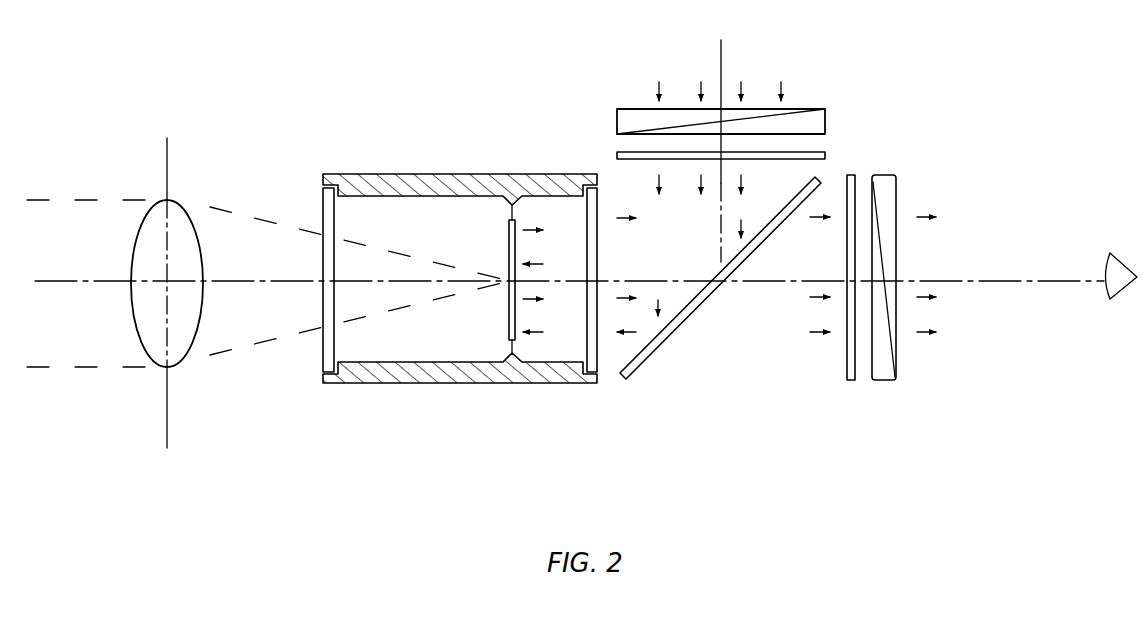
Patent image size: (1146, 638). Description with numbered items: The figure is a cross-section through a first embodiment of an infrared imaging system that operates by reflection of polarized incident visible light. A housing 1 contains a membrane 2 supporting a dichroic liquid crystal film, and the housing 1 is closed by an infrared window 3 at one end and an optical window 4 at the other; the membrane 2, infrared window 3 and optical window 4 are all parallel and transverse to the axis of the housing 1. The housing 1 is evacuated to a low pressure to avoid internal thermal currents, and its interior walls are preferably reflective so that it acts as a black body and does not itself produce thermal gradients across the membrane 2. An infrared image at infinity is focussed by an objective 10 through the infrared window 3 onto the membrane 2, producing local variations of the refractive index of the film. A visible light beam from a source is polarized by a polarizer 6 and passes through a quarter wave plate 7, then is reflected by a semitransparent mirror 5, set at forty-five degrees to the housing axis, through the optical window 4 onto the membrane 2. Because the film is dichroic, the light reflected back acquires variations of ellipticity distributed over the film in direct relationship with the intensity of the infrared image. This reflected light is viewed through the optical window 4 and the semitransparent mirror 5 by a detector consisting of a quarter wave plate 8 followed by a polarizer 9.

The housing 1 is at (485, 174).
The membrane 2 is at (509, 312).
The infrared window 3 is at (323, 212).
The optical window 4 is at (598, 258).
The semitransparent mirror 5 is at (691, 314).
The polarizer 6 is at (808, 110).
The quarter wave plate 7 is at (812, 152).
The quarter wave plate 8 is at (848, 376).
The polarizer 9 is at (893, 377).
The objective 10 is at (130, 303).